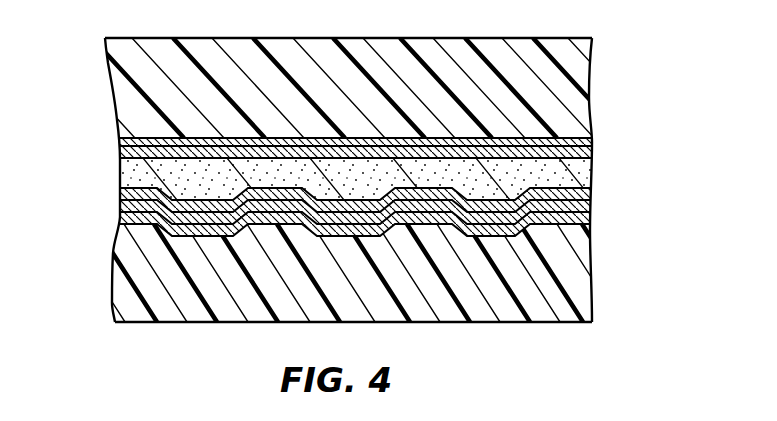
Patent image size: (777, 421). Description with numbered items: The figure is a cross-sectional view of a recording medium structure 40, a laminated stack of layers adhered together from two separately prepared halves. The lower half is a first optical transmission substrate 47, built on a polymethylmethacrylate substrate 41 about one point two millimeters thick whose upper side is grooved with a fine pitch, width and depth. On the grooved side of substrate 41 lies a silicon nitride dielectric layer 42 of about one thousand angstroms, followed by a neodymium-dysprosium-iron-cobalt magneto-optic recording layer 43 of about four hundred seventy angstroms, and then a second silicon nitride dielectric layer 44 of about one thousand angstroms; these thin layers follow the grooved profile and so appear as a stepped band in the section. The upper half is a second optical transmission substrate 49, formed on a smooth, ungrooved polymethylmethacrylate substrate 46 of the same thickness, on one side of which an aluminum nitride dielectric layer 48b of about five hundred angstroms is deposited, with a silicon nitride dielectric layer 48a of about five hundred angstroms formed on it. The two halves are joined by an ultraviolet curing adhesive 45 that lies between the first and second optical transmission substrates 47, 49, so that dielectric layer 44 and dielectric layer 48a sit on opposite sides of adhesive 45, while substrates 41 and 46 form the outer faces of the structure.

The structure 40 is at (97, 317).
The polymethylmethacrylate substrate 41 is at (570, 263).
The silicon nitride dielectric layer 42 is at (587, 225).
The magneto-optic recording layer 43 is at (587, 210).
The second silicon nitride dielectric layer 44 is at (588, 193).
The ultraviolet curing adhesive 45 is at (587, 178).
The polymethylmethacrylate substrate 46 is at (573, 98).
The first optical transmission substrate 47 is at (665, 188).
The silicon nitride dielectric layer 48a is at (592, 153).
The aluminum nitride dielectric layer 48b is at (592, 142).
The second optical transmission substrate 49 is at (673, 78).